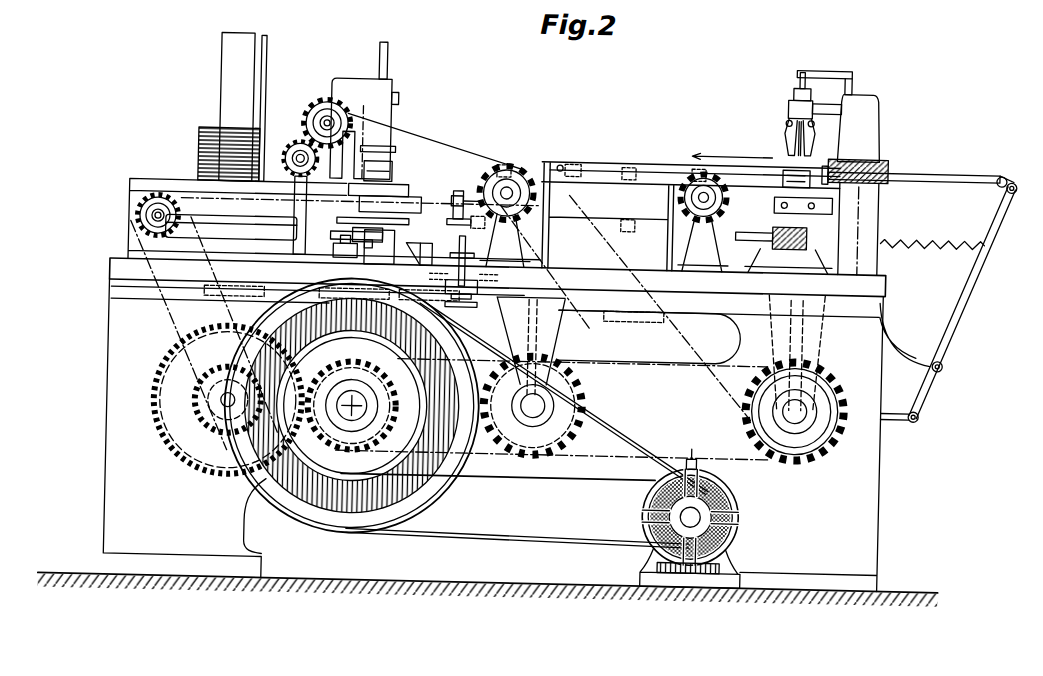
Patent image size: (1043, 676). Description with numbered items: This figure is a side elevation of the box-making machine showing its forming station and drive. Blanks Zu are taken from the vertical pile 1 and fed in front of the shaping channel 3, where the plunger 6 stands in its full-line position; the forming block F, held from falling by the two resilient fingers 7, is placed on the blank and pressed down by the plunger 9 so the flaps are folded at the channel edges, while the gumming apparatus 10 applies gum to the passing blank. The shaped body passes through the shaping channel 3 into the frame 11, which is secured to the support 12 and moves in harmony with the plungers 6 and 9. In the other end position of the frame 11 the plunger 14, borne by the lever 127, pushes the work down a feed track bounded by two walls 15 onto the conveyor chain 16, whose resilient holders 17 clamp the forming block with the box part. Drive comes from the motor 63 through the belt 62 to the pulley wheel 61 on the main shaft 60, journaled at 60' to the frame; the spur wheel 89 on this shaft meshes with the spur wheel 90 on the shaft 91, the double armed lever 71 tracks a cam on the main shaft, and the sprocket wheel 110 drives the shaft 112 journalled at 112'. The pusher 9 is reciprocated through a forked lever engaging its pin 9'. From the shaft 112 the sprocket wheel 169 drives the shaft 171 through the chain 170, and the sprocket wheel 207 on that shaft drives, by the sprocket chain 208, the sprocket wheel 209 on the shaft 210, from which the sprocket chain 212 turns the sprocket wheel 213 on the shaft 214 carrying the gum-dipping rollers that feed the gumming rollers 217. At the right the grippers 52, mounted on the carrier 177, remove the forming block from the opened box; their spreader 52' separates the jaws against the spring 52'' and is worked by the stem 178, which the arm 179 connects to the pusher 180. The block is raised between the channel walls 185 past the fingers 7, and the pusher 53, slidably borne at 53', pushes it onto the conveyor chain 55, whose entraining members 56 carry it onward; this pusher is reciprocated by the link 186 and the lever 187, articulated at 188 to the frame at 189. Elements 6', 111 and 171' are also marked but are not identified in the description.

The vertical pile 1 is at (217, 56).
The shaping channel 3 is at (408, 206).
The plunger 6 is at (390, 163).
The carrier pin 6' is at (391, 234).
The resilient fingers 7 is at (385, 132).
The plunger 9 is at (398, 138).
The pin 9' is at (398, 113).
The gumming apparatus 10 is at (292, 218).
The frame 11 is at (416, 216).
The support 12 is at (364, 246).
The plunger 14 is at (449, 181).
The walls 15 is at (442, 236).
The conveyor chain 16 is at (472, 295).
The resilient holders 17 is at (472, 306).
The grippers 52 is at (787, 104).
The spreader 52' is at (765, 131).
The spring 52'' is at (772, 136).
The plunger 53 is at (911, 156).
The slide bearing 53' is at (880, 155).
The conveyor chain 55 is at (678, 164).
The entraining members 56 is at (565, 154).
The main shaft 60 is at (350, 468).
The journal 60' is at (179, 334).
The pulley wheel 61 is at (436, 474).
The belt 62 is at (609, 536).
The motor 63 is at (686, 574).
The double armed lever 71 is at (184, 216).
The spur wheel 89 is at (418, 478).
The spur wheel 90 is at (190, 450).
The shaft 91 is at (230, 450).
The sprocket wheel 110 is at (374, 438).
The sprocket hub 111 is at (500, 434).
The shaft 112 is at (532, 428).
The journal 112' is at (551, 346).
The lever 127 is at (468, 186).
The sprocket wheel 169 is at (884, 410).
The chain 170 is at (606, 470).
The shaft 171 is at (808, 407).
The cam track 171' is at (900, 334).
The carrier 177 is at (792, 84).
The stem 178 is at (794, 70).
The arm 179 is at (812, 55).
The pusher 180 is at (846, 62).
The channel walls 185 is at (590, 154).
The link 186 is at (1006, 162).
The lever 187 is at (982, 256).
The pivot 188 is at (944, 348).
The frame point 189 is at (920, 404).
The sprocket wheel 207 is at (818, 430).
The sprocket chain 208 is at (696, 321).
The sprocket wheel 209 is at (506, 162).
The shaft 210 is at (512, 171).
The sprocket chain 212 is at (415, 142).
The sprocket wheel 213 is at (326, 96).
The shaft 214 is at (314, 98).
The gumming rollers 217 is at (293, 138).
The forming block F is at (806, 216).